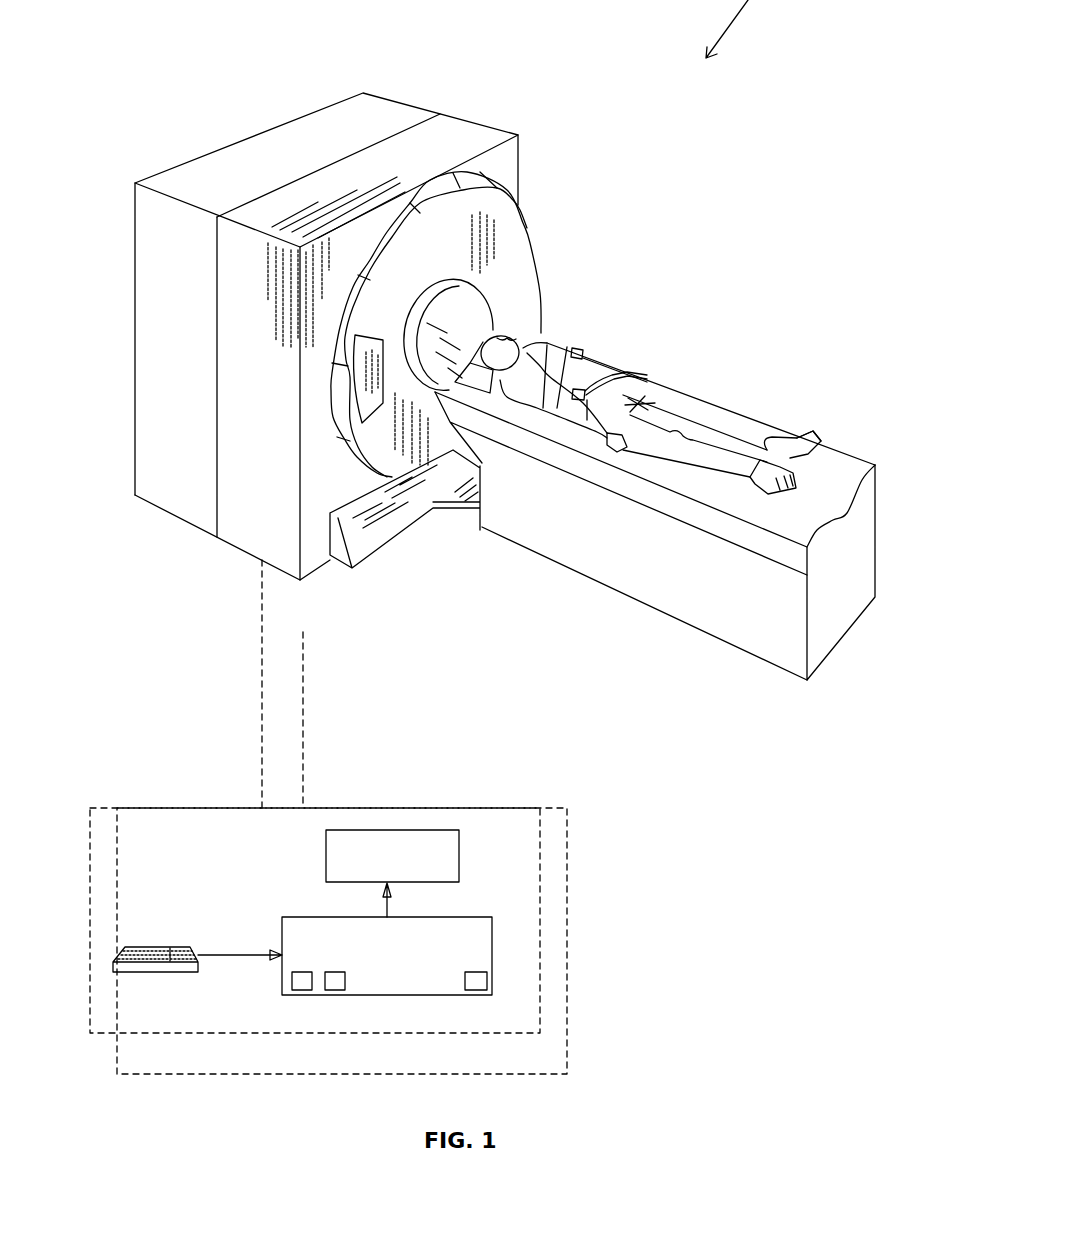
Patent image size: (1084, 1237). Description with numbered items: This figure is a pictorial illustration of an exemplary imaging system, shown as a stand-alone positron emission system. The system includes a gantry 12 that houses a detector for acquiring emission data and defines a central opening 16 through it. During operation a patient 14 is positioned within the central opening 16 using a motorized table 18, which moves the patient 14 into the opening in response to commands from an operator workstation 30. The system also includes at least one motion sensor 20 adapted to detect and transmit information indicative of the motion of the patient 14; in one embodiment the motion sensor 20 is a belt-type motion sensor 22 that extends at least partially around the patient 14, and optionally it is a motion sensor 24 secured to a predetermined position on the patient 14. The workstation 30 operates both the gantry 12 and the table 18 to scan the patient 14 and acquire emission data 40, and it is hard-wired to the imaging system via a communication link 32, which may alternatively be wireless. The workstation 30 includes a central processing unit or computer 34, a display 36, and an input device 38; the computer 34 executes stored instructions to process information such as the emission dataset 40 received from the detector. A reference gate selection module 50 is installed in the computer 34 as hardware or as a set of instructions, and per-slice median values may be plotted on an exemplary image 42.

The gantry 12 is at (512, 160).
The patient 14 is at (815, 434).
The central opening 16 is at (420, 318).
The motorized table 18 is at (580, 566).
The motion sensor 20 is at (680, 370).
The belt-type motion sensor 22 is at (585, 358).
The motion sensor 24 is at (632, 380).
The operator workstation 30 is at (162, 806).
The communication link 32 is at (262, 604).
The central processing unit (CPU) or computer 34 is at (282, 977).
The display 36 is at (459, 853).
The input device 38 is at (172, 945).
The emission data 40 is at (300, 992).
The image 42 is at (335, 992).
The reference gate selection module 50 is at (480, 992).